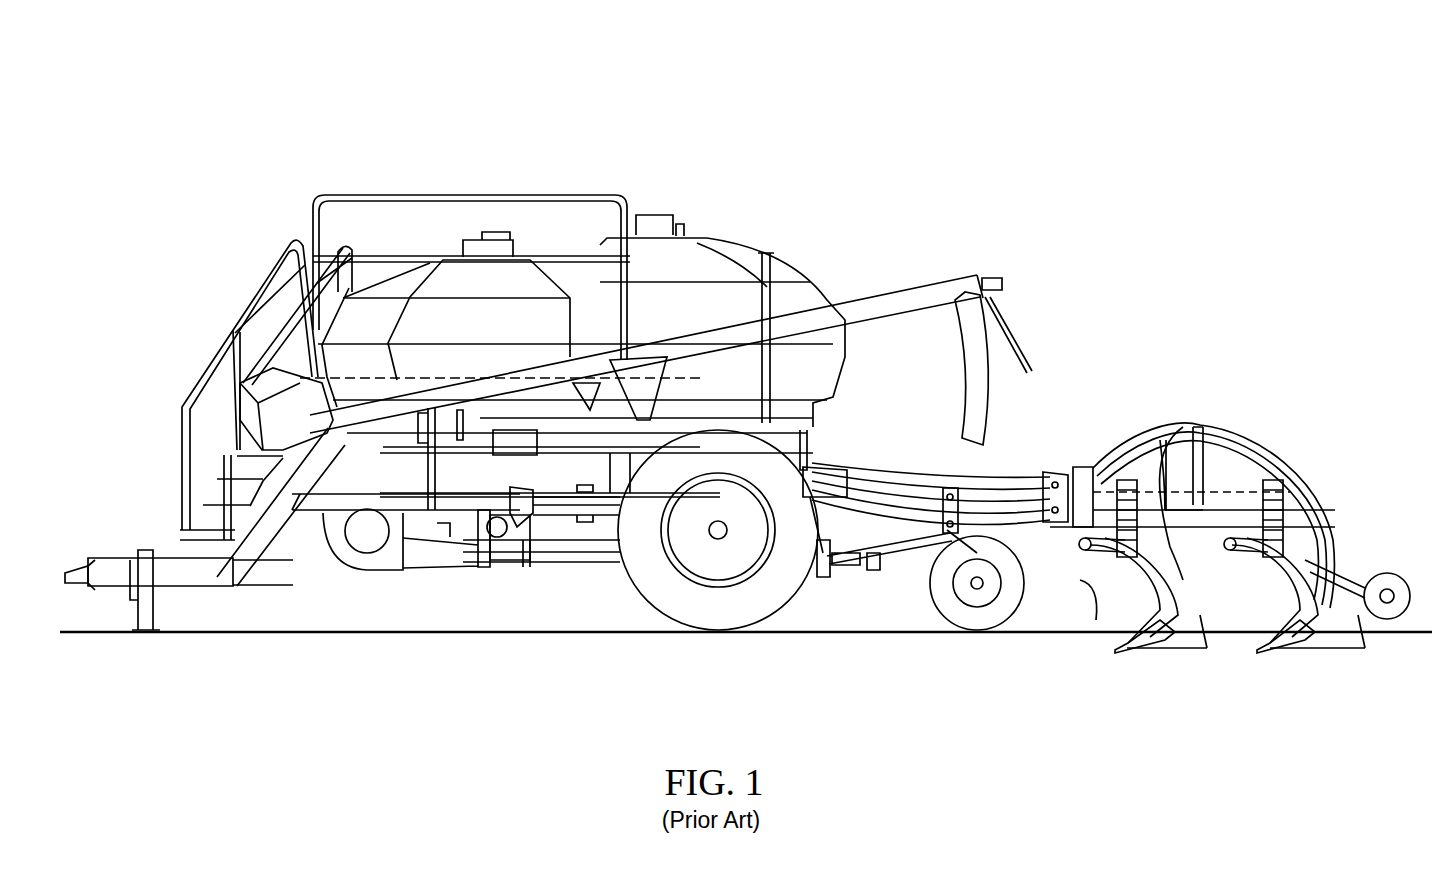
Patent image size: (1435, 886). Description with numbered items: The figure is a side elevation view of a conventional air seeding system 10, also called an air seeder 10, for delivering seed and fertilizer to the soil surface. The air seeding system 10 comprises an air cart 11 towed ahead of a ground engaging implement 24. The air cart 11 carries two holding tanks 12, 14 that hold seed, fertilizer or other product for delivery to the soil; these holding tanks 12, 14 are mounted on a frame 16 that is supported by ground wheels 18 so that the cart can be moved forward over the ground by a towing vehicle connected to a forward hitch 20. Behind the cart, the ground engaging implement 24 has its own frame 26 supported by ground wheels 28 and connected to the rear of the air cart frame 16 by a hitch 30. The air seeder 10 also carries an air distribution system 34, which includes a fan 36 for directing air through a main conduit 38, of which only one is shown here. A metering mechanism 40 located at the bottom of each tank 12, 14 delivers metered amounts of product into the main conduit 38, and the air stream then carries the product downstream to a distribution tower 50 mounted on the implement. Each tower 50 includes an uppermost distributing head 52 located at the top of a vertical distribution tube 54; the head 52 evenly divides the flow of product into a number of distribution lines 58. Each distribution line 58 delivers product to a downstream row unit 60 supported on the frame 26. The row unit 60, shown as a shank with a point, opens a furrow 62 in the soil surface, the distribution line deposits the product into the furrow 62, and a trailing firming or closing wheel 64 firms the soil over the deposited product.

The air seeding system 10 is at (1002, 140).
The air cart 11 is at (518, 113).
The holding tank 12 is at (447, 320).
The holding tank 14 is at (685, 302).
The frame 16 is at (308, 505).
The ground wheels 18 is at (767, 597).
The forward hitch 20 is at (107, 567).
The ground engaging implement 24 is at (1147, 403).
The frame 26 is at (1208, 517).
The ground wheels 28 is at (980, 613).
The hitch 30 is at (875, 572).
The air distribution system 34 is at (432, 580).
The fan 36 is at (362, 557).
The main conduit 38 is at (505, 563).
The metering mechanism 40 is at (538, 525).
The distribution tower 50 is at (1238, 410).
The distributing head 52 is at (1197, 423).
The vertical distribution tube 54 is at (1197, 477).
The distribution lines 58 is at (1317, 480).
The row unit 60 is at (1115, 660).
The furrow 62 is at (1182, 637).
The closing wheel 64 is at (1370, 573).